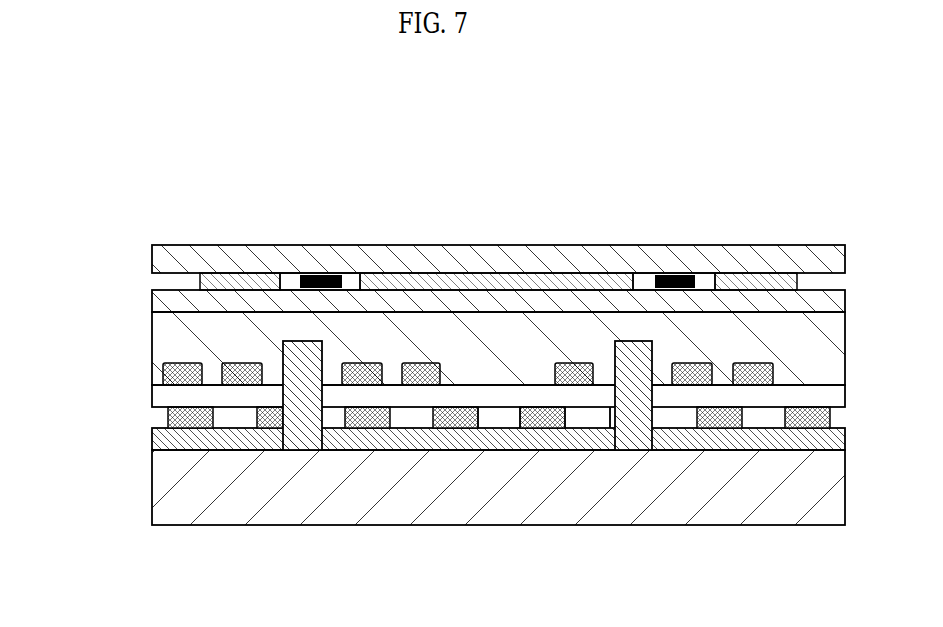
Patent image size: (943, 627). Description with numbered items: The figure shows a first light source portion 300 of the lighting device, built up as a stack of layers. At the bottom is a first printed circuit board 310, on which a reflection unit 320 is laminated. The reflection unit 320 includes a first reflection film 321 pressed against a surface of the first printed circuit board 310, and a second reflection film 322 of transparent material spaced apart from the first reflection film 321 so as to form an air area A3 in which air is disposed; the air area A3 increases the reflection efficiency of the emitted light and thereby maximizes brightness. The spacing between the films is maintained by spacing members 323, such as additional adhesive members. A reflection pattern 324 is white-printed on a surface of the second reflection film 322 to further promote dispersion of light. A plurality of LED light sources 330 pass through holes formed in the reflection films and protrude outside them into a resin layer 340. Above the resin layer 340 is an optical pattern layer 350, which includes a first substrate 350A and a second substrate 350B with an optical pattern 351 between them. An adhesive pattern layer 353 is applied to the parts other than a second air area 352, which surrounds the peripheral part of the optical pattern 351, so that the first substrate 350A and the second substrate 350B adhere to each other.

The first light source portion 300 is at (110, 145).
The first printed circuit board 310 is at (170, 495).
The reflection unit 320 is at (91, 360).
The first reflection film 321 is at (157, 437).
The second reflection film 322 is at (160, 392).
The spacing members 323 is at (167, 415).
The reflection pattern 324 is at (168, 366).
The LED light sources 330 is at (297, 428).
The resin layer 340 is at (172, 339).
The optical pattern layer 350 is at (76, 247).
The first substrate 350A is at (155, 257).
The second substrate 350B is at (155, 297).
The optical pattern 351 is at (662, 272).
The second air area 352 is at (708, 280).
The adhesive pattern layer 353 is at (782, 278).
The air area A3 is at (497, 418).